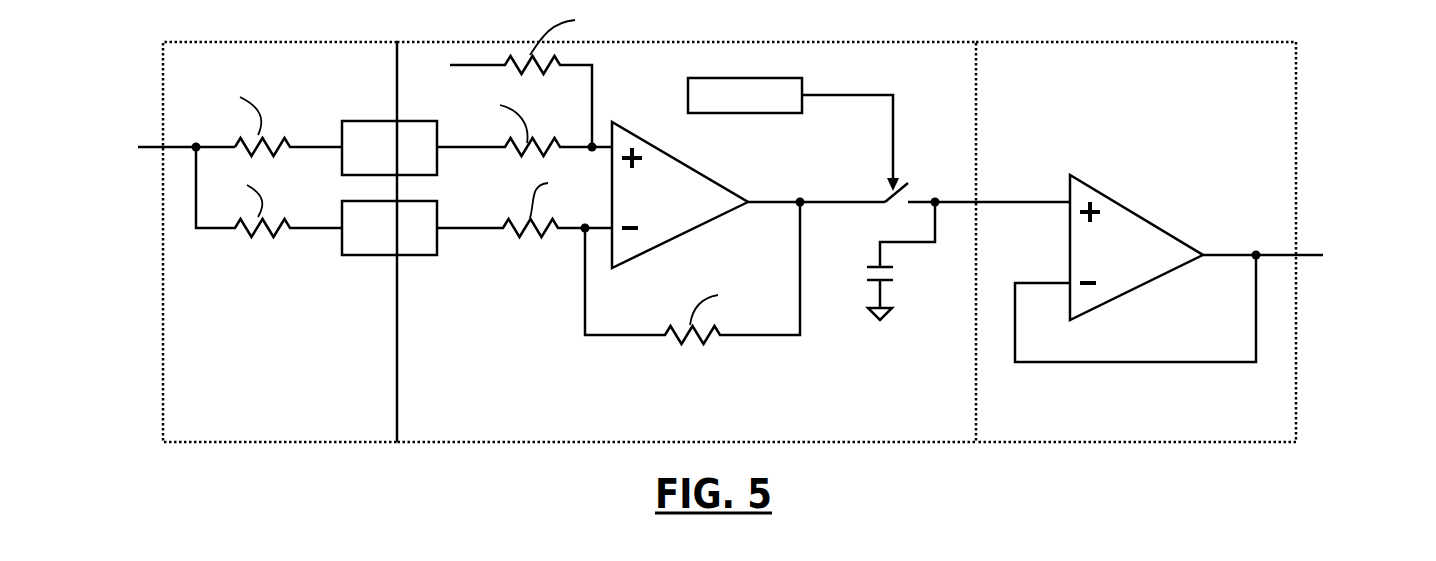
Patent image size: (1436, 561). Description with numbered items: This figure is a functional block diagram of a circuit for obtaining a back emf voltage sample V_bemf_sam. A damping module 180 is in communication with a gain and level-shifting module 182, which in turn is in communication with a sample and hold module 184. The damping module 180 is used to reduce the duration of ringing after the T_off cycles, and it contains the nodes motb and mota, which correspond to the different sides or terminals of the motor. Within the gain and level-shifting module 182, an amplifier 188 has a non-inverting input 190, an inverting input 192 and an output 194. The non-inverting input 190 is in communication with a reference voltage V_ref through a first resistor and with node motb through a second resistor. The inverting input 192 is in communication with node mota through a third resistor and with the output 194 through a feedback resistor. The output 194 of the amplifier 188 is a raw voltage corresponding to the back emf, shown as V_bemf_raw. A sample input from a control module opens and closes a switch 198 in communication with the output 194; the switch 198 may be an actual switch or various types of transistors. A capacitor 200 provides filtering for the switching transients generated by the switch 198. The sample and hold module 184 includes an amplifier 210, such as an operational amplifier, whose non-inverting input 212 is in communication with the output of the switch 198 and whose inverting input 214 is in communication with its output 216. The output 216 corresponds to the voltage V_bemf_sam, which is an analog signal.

The damping module 180 is at (212, 445).
The gain and level-shifting module 182 is at (686, 259).
The sample and hold module 184 is at (1192, 268).
The amplifier 188 is at (648, 138).
The non-inverting input 190 is at (600, 145).
The inverting input 192 is at (600, 232).
The output 194 is at (758, 205).
The switch 198 is at (918, 175).
The capacitor 200 is at (893, 265).
The amplifier 210 is at (1125, 206).
The non-inverting input 212 is at (1008, 200).
The inverting input 214 is at (1037, 282).
The output 216 is at (1220, 253).